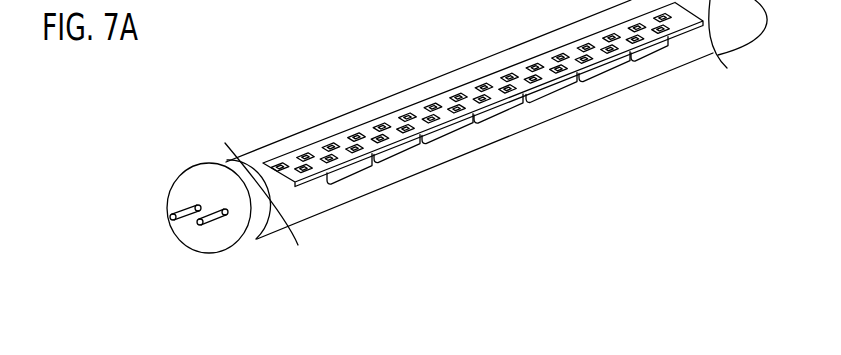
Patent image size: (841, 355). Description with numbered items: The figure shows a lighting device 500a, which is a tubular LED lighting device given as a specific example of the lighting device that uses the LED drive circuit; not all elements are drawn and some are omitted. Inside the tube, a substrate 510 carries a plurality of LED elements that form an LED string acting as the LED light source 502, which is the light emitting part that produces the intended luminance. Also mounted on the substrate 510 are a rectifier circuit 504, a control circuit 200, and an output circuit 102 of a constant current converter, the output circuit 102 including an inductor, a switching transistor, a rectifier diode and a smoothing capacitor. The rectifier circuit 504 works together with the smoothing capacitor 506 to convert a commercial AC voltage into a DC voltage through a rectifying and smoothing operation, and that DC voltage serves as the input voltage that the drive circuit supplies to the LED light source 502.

The lighting device 500a is at (467, 158).
The output circuit 102 is at (568, 88).
The substrate 510 is at (683, 30).
The control circuit 200 is at (483, 117).
The LED light source 502 is at (462, 90).
The rectifier circuit 504 is at (417, 153).
The smoothing capacitor 506 is at (500, 112).